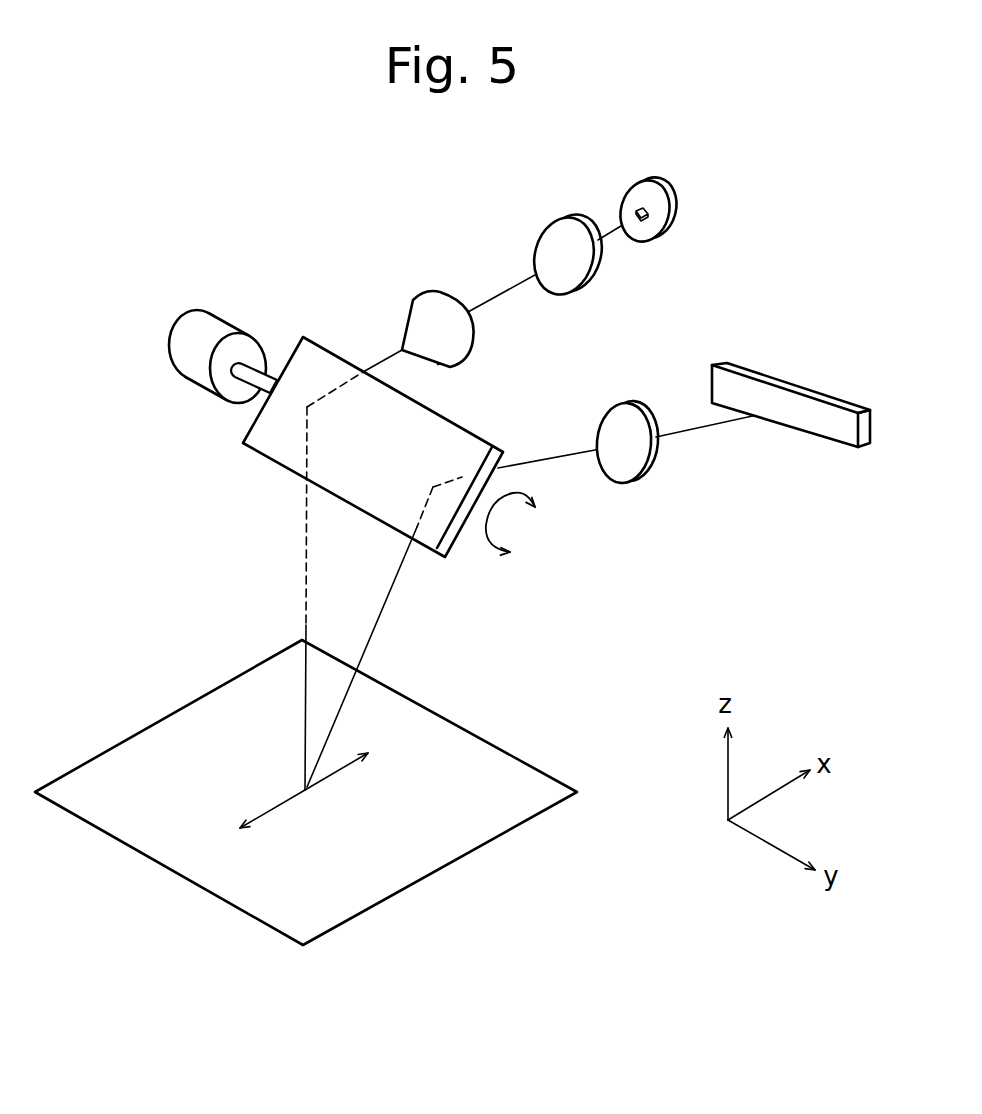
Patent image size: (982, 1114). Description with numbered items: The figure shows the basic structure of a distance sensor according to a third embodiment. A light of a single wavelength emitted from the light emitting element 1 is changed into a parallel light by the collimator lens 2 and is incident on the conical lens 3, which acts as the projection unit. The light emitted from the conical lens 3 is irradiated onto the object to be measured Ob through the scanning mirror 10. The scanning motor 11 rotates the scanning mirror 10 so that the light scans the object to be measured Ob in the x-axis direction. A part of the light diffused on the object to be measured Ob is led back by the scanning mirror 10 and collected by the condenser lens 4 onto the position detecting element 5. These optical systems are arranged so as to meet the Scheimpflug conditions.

The light emitting element 1 is at (662, 188).
The collimator lens 2 is at (577, 215).
The conical lens 3 is at (450, 285).
The condenser lens 4 is at (620, 483).
The position detecting element 5 is at (827, 440).
The scanning mirror 10 is at (335, 347).
The scanning motor 11 is at (237, 318).
The object to be measured Ob is at (490, 840).